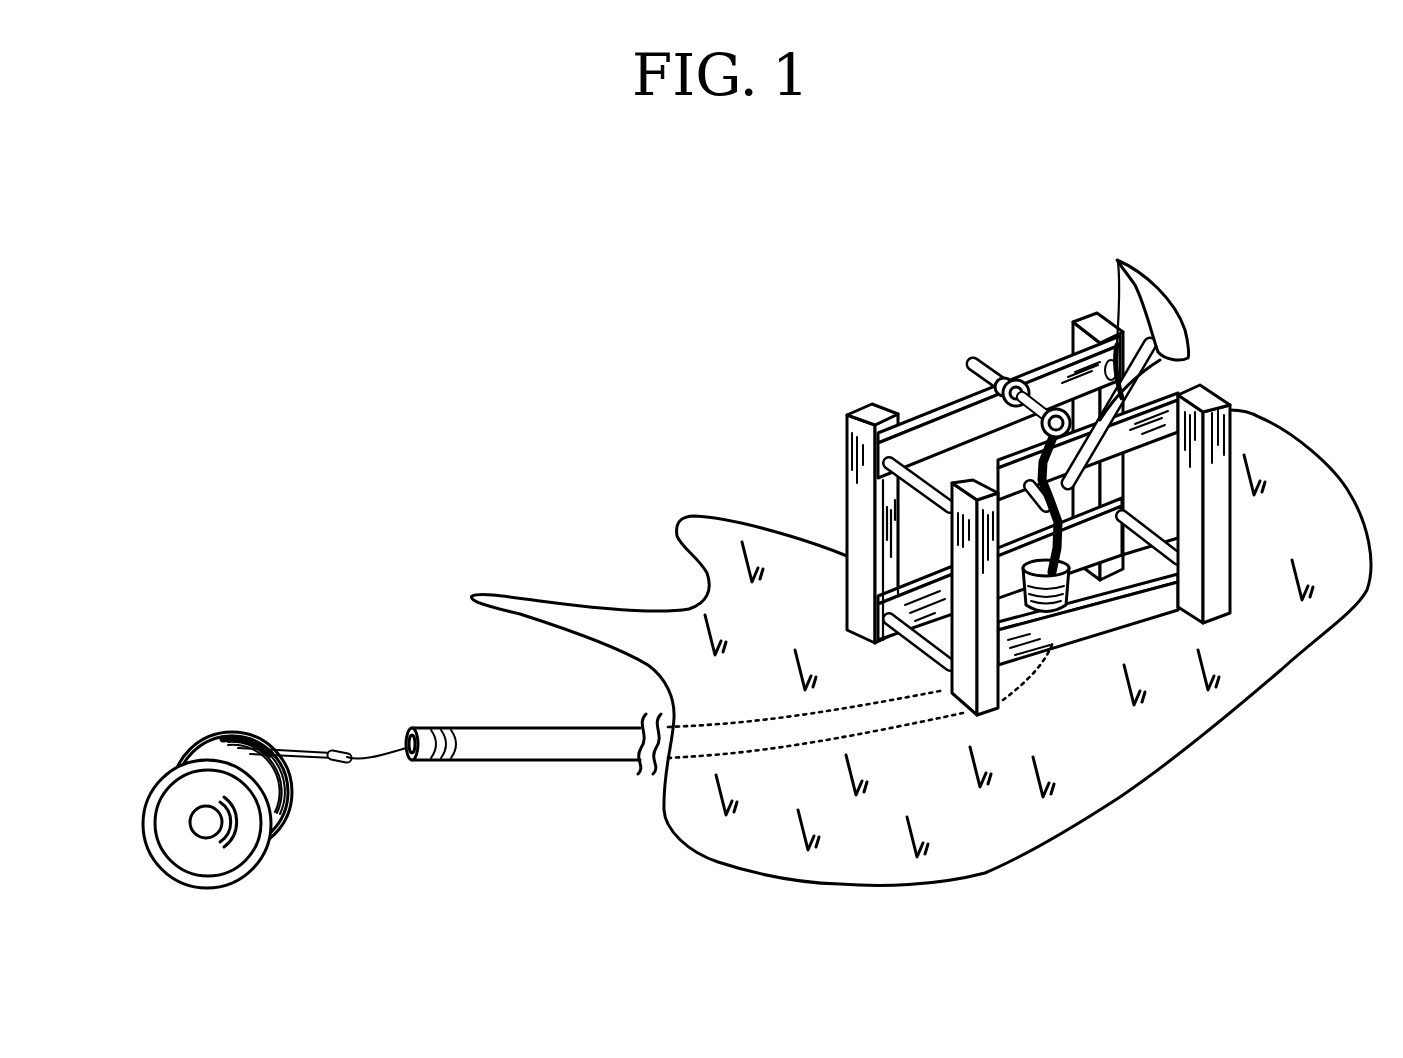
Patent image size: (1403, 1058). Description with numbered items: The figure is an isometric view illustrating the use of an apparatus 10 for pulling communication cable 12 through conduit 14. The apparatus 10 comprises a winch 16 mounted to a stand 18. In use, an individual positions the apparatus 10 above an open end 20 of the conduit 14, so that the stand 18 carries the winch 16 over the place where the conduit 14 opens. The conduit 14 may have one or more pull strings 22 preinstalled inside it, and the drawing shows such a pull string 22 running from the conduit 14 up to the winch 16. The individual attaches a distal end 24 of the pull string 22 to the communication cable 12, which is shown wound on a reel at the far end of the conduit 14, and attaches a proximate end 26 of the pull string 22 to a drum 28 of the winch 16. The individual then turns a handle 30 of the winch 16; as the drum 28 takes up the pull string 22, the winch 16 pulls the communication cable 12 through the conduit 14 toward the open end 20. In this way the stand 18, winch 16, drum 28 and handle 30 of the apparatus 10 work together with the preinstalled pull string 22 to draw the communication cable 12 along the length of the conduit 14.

The apparatus 10 is at (598, 378).
The communication cable 12 is at (300, 752).
The conduit 14 is at (1072, 587).
The winch 16 is at (973, 366).
The stand 18 is at (847, 408).
The open end 20 is at (1120, 524).
The pull string 22 is at (1119, 265).
The distal end 24 is at (345, 762).
The proximate end 26 is at (1048, 402).
The drum 28 is at (1042, 428).
The handle 30 is at (1070, 474).